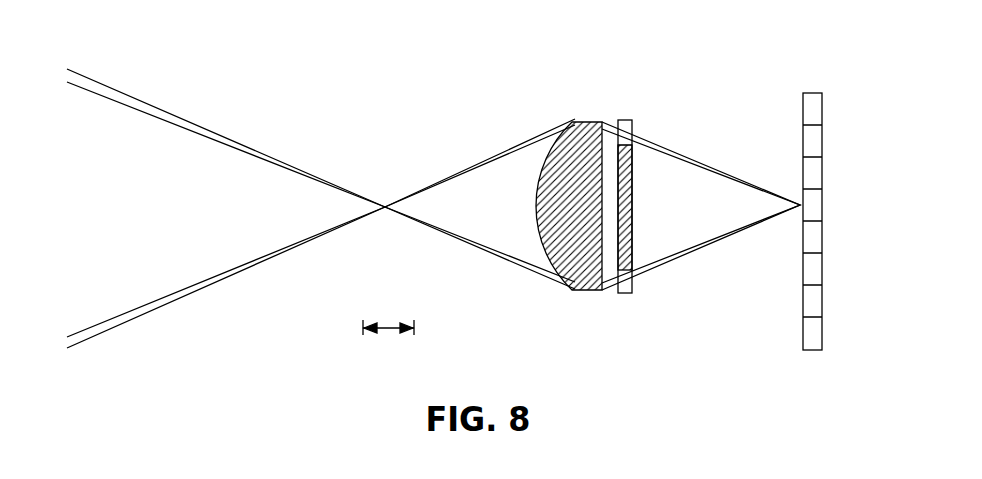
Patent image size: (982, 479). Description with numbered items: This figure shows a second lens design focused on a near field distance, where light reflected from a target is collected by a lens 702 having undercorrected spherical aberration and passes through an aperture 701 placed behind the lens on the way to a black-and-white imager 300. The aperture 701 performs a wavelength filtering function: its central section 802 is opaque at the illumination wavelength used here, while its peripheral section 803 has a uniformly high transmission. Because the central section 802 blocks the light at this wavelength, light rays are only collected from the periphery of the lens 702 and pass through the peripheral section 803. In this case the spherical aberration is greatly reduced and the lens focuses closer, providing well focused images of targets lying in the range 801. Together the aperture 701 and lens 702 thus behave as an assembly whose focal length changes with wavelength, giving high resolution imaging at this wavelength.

The imager 300 is at (835, 95).
The aperture 701 is at (637, 113).
The lens 702 is at (572, 118).
The range 801 is at (389, 331).
The central section 802 is at (632, 193).
The peripheral section 803 is at (635, 131).